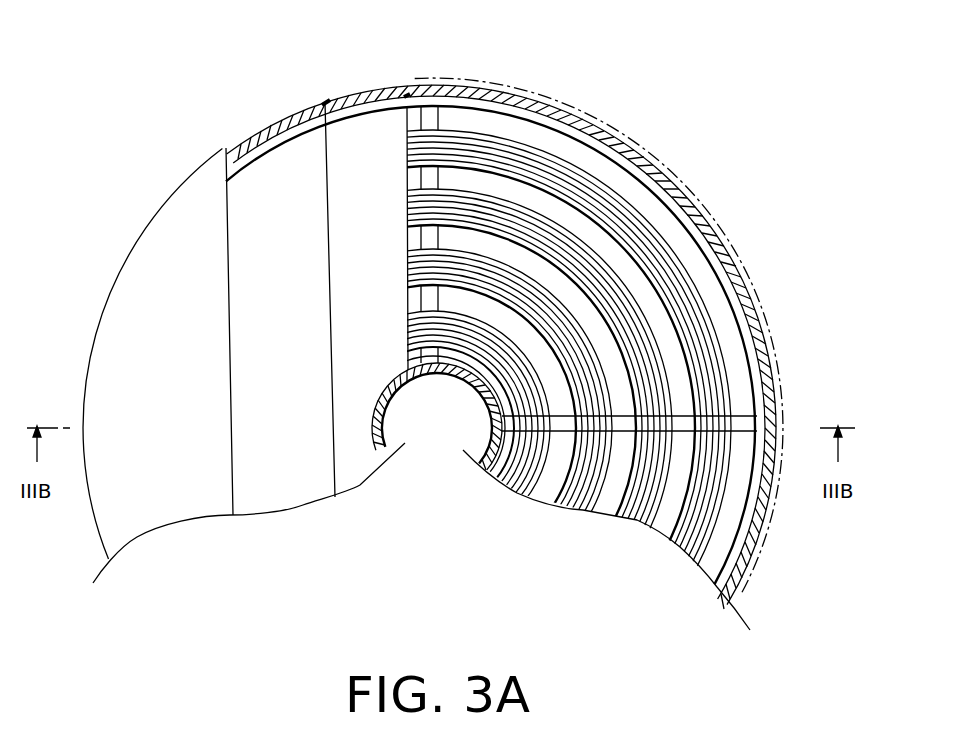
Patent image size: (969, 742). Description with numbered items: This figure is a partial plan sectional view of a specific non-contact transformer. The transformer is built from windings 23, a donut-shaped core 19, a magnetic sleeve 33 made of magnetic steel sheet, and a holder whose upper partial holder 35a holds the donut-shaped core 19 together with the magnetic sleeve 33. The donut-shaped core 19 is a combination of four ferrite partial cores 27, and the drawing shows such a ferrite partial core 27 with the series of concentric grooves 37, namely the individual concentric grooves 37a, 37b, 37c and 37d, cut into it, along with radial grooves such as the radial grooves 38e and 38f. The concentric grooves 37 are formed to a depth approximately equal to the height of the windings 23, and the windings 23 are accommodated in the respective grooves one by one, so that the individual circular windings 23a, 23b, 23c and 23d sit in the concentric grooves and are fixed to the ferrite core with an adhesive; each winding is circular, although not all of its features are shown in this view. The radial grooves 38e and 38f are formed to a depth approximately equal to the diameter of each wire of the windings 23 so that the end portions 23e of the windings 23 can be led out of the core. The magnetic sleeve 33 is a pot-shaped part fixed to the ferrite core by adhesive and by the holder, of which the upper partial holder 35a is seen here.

The donut-shaped core 19 is at (347, 455).
The windings 23 is at (758, 52).
The winding 23a is at (462, 322).
The winding 23b is at (525, 330).
The winding 23c is at (588, 280).
The winding 23d is at (640, 225).
The end portions of the windings 23e is at (502, 432).
The ferrite partial core 27 is at (295, 167).
The magnetic sleeve 33 is at (245, 292).
The upper partial holder 35a is at (173, 497).
The concentric grooves 37 is at (665, 590).
The concentric groove 37a is at (510, 497).
The concentric groove 37b is at (572, 507).
The concentric groove 37c is at (635, 522).
The concentric groove 37d is at (680, 547).
The radial groove 38e is at (748, 405).
The radial groove 38f is at (417, 123).